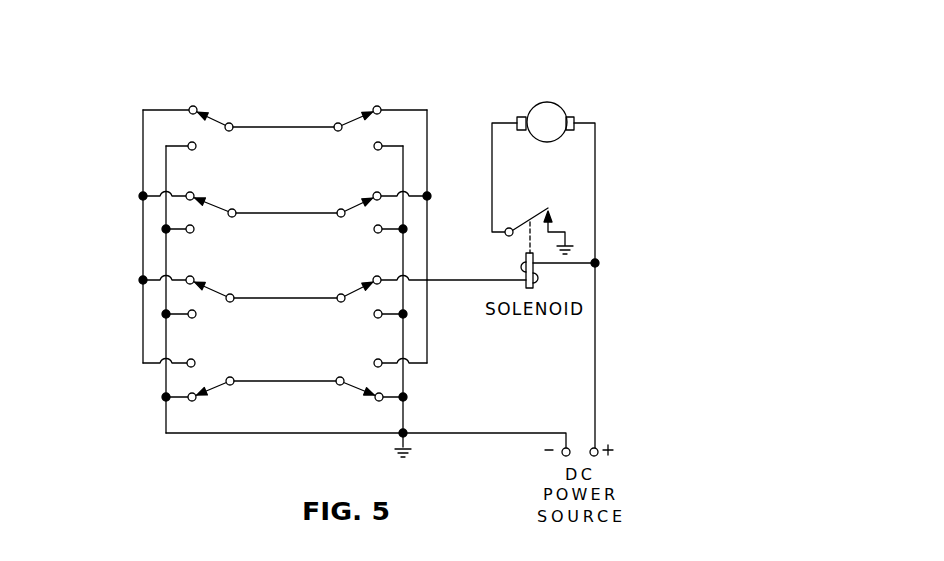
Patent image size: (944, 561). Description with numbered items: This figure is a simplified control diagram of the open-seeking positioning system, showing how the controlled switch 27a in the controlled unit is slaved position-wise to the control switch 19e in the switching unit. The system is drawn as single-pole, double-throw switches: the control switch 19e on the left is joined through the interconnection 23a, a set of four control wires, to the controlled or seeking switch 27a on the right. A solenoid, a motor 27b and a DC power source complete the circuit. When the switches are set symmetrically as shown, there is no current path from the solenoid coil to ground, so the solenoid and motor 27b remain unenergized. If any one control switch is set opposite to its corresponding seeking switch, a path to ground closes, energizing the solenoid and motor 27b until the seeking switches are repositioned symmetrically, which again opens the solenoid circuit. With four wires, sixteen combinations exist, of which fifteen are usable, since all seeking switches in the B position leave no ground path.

The control switch 19e is at (205, 15).
The controlled switch 27a is at (396, 15).
The interconnection 23a is at (300, 120).
The motor 27b is at (561, 108).